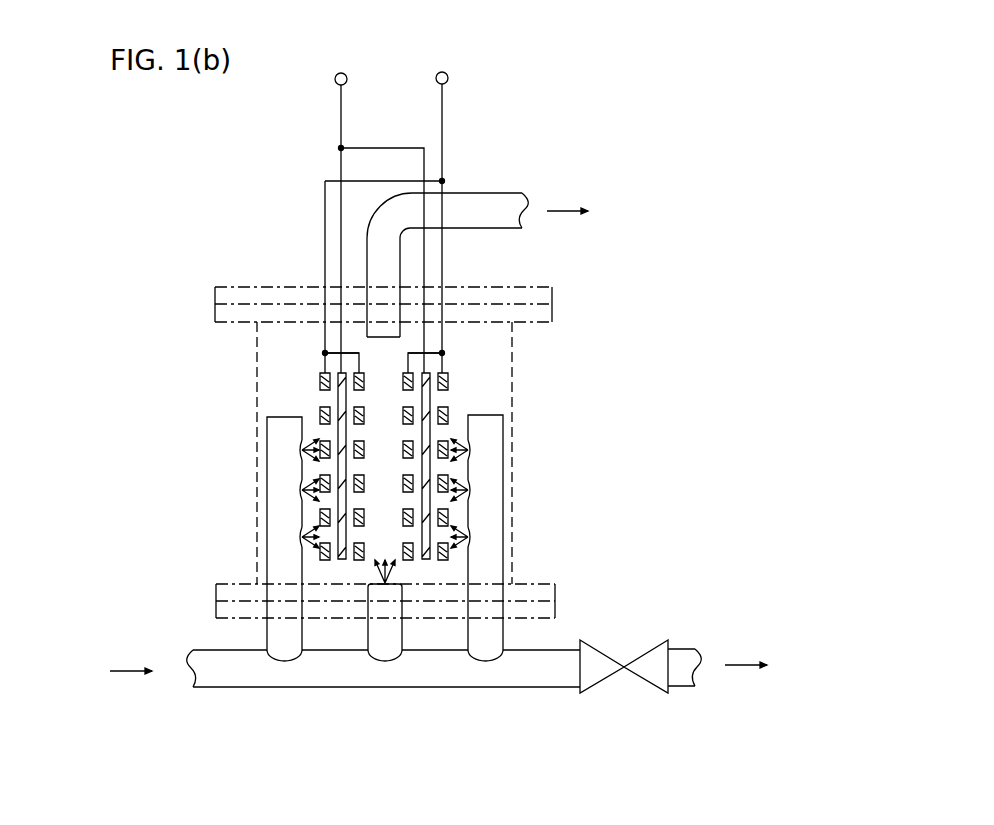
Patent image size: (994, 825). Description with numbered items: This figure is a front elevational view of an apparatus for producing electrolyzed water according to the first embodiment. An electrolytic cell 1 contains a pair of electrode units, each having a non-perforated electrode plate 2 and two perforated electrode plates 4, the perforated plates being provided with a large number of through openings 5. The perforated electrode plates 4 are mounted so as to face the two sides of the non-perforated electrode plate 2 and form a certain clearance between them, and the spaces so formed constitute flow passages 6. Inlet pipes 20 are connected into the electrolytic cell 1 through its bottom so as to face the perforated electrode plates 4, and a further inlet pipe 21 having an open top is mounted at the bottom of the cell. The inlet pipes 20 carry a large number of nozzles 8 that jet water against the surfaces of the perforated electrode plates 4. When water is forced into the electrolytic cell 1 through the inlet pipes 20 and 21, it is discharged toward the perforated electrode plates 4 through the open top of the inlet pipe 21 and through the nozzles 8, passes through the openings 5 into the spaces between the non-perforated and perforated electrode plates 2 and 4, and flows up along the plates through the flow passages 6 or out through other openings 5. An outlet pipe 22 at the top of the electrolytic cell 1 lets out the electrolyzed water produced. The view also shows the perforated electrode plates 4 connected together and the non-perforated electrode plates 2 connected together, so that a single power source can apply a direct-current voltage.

The electrolytic cell 1 is at (512, 548).
The non-perforated electrode plate 2 is at (430, 399).
The perforated electrode plate 4 is at (447, 412).
The through opening 5 is at (412, 530).
The flow passage 6 is at (340, 560).
The nozzle 8 is at (304, 546).
The inlet pipe 20 is at (503, 473).
The inlet pipe 21 is at (385, 632).
The outlet pipe 22 is at (483, 193).